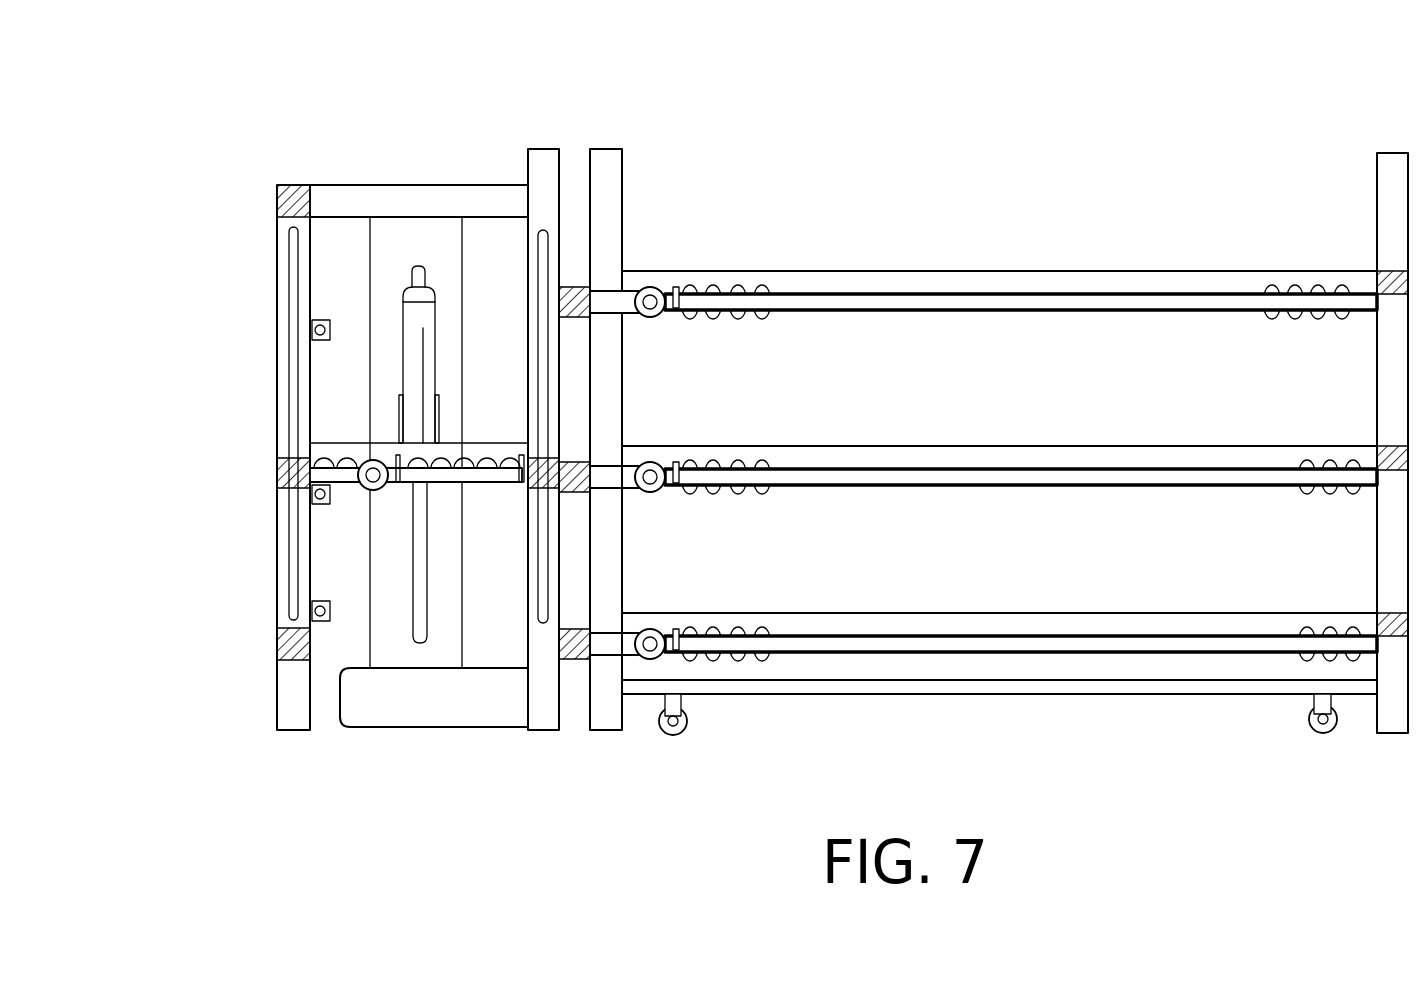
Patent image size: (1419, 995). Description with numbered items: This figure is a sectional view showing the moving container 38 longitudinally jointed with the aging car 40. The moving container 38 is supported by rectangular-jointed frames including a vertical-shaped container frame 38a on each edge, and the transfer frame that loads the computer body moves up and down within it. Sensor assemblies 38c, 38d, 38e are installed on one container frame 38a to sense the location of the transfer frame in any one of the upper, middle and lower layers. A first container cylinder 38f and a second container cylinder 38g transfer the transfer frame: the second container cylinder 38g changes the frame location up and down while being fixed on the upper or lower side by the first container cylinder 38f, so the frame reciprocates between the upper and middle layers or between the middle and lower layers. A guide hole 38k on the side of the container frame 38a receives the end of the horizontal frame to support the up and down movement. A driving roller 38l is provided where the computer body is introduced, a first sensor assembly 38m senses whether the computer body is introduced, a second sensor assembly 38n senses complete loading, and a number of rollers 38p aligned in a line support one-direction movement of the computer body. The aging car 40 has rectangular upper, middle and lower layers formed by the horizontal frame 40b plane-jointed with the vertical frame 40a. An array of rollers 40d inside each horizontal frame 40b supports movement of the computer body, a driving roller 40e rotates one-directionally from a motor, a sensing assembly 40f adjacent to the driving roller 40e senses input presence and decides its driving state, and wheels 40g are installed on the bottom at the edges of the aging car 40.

The moving container 38 is at (273, 178).
The container frame 38a is at (276, 252).
The sensor assembly 38c is at (316, 330).
The sensor assembly 38d is at (316, 490).
The sensor assembly 38e is at (316, 608).
The first container cylinder 38f is at (400, 243).
The second container cylinder 38g is at (426, 318).
The guide hole 38k is at (292, 297).
The driving roller 38l is at (318, 468).
The first sensor assembly 38m is at (362, 462).
The second sensor assembly 38n is at (520, 484).
The rollers 38p is at (490, 457).
The aging car 40 is at (995, 145).
The vertical frame 40a is at (610, 180).
The horizontal frame 40b is at (785, 270).
The array of rollers 40d is at (717, 286).
The driving roller 40e is at (653, 315).
The sensing assembly 40f is at (670, 311).
The wheels 40g is at (674, 737).